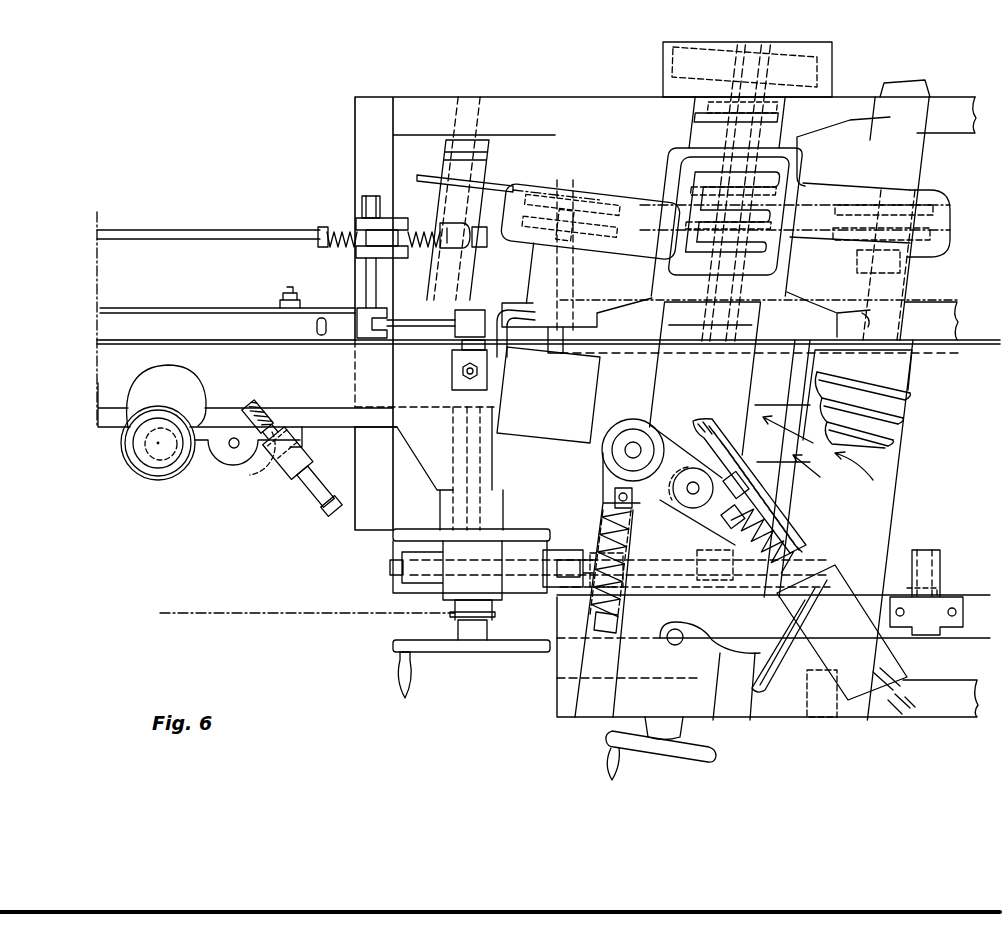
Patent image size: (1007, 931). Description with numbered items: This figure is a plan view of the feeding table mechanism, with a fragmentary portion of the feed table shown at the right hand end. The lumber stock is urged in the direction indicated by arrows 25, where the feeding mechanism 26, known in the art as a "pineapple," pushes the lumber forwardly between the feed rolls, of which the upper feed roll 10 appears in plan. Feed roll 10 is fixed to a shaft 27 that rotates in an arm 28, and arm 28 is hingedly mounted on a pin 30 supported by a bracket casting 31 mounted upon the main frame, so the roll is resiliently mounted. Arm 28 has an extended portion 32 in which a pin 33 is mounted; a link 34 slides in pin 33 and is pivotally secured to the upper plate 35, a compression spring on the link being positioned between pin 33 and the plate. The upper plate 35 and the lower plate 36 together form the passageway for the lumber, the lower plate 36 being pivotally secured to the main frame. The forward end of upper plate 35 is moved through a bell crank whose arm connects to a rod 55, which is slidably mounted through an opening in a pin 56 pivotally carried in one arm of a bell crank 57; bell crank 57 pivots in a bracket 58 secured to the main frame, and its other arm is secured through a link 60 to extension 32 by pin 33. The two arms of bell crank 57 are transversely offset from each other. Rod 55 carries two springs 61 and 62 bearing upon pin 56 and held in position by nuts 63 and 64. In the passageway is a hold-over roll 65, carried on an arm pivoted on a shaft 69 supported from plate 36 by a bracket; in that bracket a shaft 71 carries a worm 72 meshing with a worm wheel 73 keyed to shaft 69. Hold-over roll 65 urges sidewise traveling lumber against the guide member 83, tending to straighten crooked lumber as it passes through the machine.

The feed roll 10 is at (564, 436).
The arrows 25 is at (800, 558).
The feeding mechanism 26 is at (900, 404).
The shaft 27 is at (563, 338).
The arm 28 is at (540, 264).
The pin 30 is at (703, 333).
The bracket casting 31 is at (713, 124).
The extended portion 32 is at (498, 360).
The pin 33 is at (462, 373).
The link 34 is at (458, 370).
The upper plate 35 is at (240, 326).
The lower plate 36 is at (105, 382).
The rod 55 is at (138, 238).
The pin 56 is at (392, 232).
The bell crank 57 is at (396, 254).
The bracket 58 is at (352, 212).
The link 60 is at (486, 335).
The spring 61 is at (352, 246).
The spring 62 is at (428, 225).
The nut 63 is at (320, 238).
The nut 64 is at (460, 238).
The hold-over roll 65 is at (158, 482).
The shaft 69 is at (233, 448).
The shaft 71 is at (301, 446).
The worm 72 is at (285, 400).
The worm wheel 73 is at (256, 478).
The guide member 83 is at (262, 342).